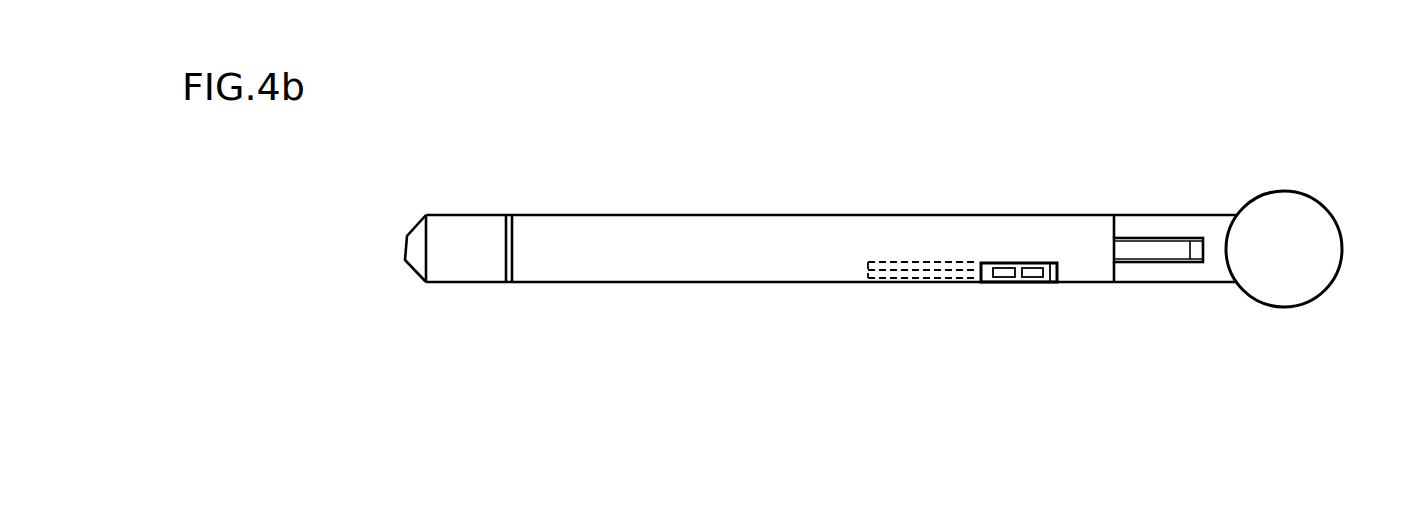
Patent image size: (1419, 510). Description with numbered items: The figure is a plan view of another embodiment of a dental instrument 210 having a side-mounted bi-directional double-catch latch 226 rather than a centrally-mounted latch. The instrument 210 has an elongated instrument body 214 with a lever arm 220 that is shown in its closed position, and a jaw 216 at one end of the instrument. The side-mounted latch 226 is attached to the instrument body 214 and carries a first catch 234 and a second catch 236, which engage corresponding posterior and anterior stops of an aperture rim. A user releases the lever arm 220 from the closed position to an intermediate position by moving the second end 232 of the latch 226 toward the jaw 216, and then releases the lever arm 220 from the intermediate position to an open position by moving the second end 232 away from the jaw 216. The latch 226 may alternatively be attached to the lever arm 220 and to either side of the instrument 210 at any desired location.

The instrument 210 is at (556, 160).
The instrument body 214 is at (455, 253).
The jaw 216 is at (1287, 222).
The lever arm 220 is at (702, 237).
The side-mounted latch 226 is at (935, 277).
The second end 232 is at (1015, 262).
The first catch 234 is at (985, 262).
The second catch 236 is at (1050, 283).